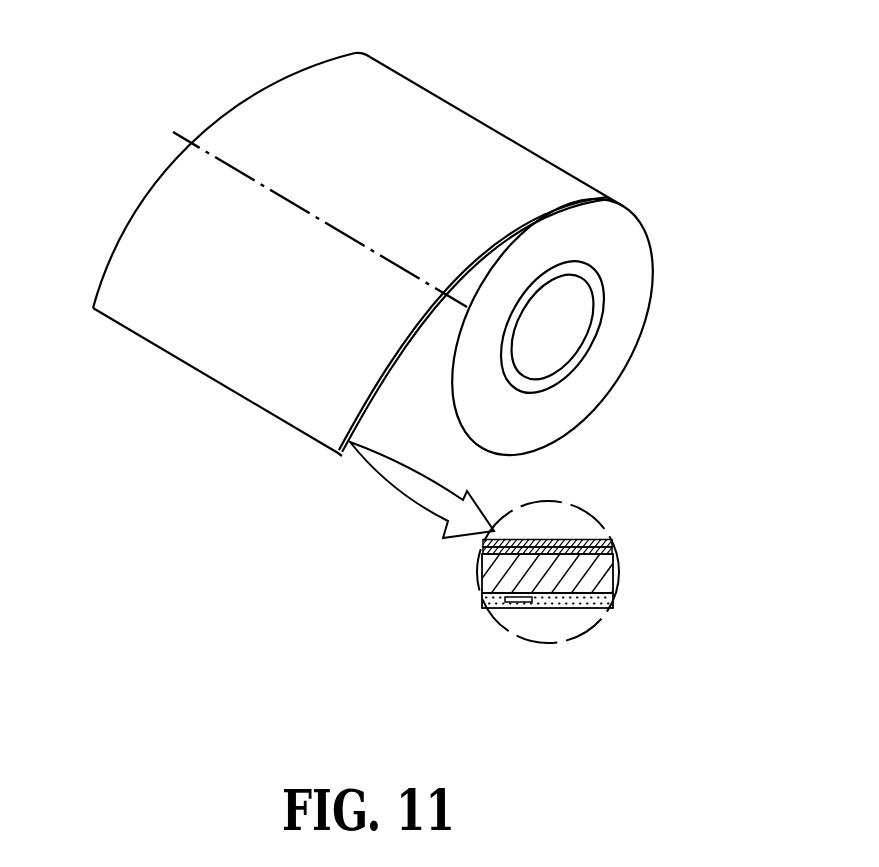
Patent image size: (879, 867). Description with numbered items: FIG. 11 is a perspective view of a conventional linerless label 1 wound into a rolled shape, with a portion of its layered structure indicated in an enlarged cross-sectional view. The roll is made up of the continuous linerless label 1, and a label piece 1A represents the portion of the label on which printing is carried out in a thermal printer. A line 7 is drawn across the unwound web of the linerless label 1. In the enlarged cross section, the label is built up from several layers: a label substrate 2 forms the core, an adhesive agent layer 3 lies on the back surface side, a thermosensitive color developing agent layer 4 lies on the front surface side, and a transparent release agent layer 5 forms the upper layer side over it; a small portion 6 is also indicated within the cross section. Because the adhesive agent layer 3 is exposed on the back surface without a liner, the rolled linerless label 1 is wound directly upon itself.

The linerless label 1 is at (498, 95).
The label piece 1A is at (133, 217).
The cutting line 7 is at (190, 140).
The base material 2 is at (610, 583).
The adhesive agent layer 3 is at (607, 607).
The intermediate layer 4 is at (610, 550).
The release layer 5 is at (610, 540).
The marker portion 6 is at (513, 603).